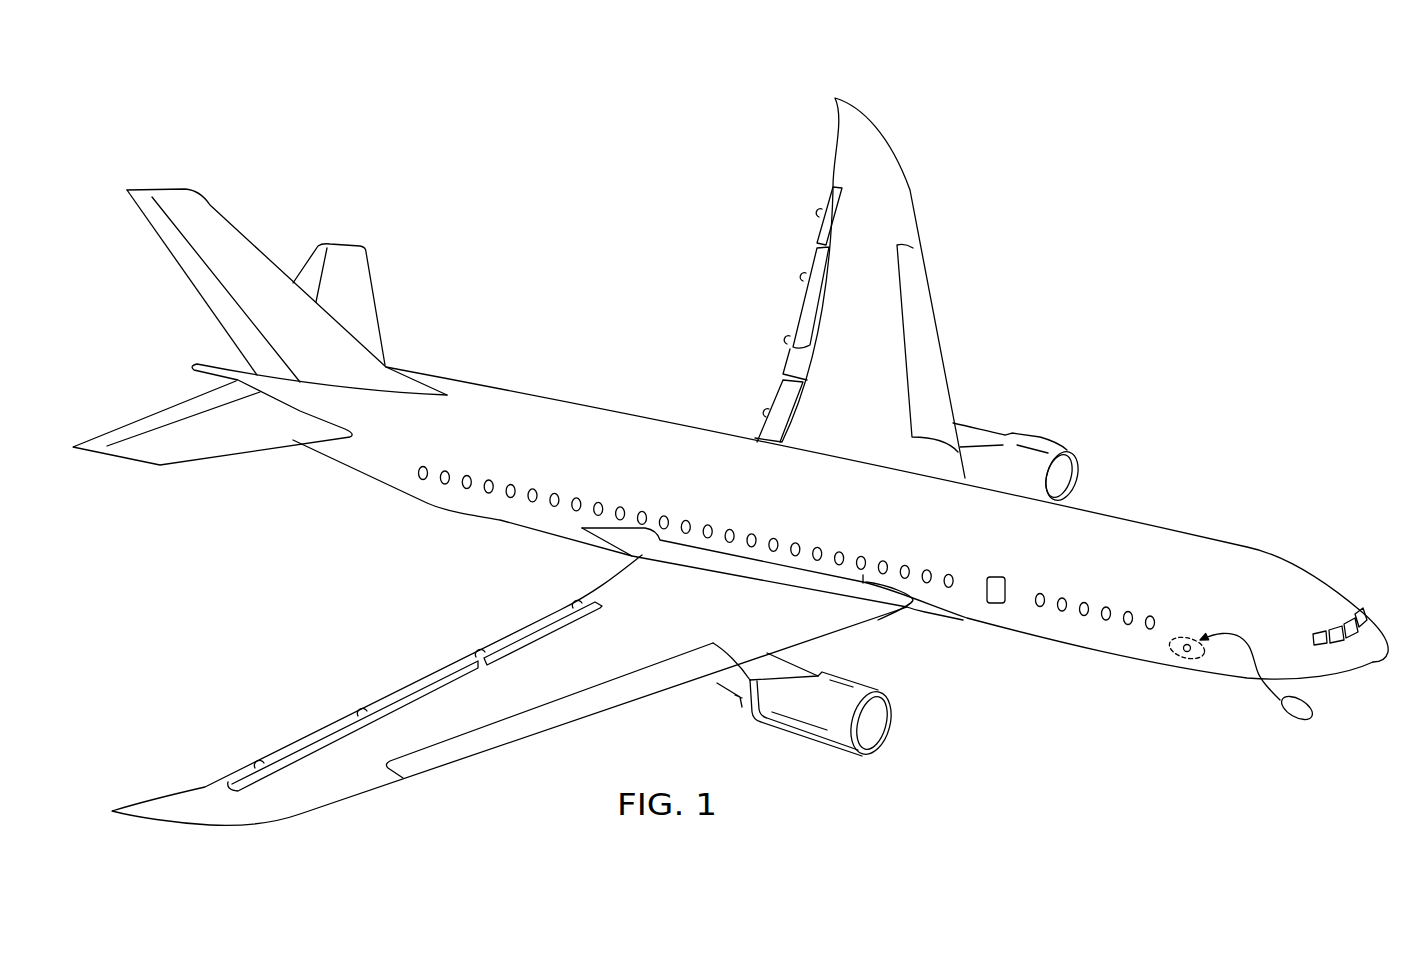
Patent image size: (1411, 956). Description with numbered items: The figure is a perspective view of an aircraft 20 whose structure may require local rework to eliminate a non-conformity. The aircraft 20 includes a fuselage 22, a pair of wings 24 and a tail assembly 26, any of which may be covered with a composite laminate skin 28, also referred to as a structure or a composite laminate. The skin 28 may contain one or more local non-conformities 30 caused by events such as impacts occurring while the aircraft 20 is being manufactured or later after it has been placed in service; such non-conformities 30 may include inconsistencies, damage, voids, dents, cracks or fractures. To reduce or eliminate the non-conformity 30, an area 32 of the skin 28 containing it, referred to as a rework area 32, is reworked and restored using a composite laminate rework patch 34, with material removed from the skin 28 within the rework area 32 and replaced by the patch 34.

The aircraft 20 is at (730, 461).
The fuselage 22 is at (587, 411).
The wings 24 is at (462, 692).
The tail assembly 26 is at (310, 207).
The composite laminate skin 28 is at (239, 259).
The non-conformity 30 is at (1187, 642).
The rework area 32 is at (1180, 658).
The composite laminate rework patch 34 is at (1313, 719).